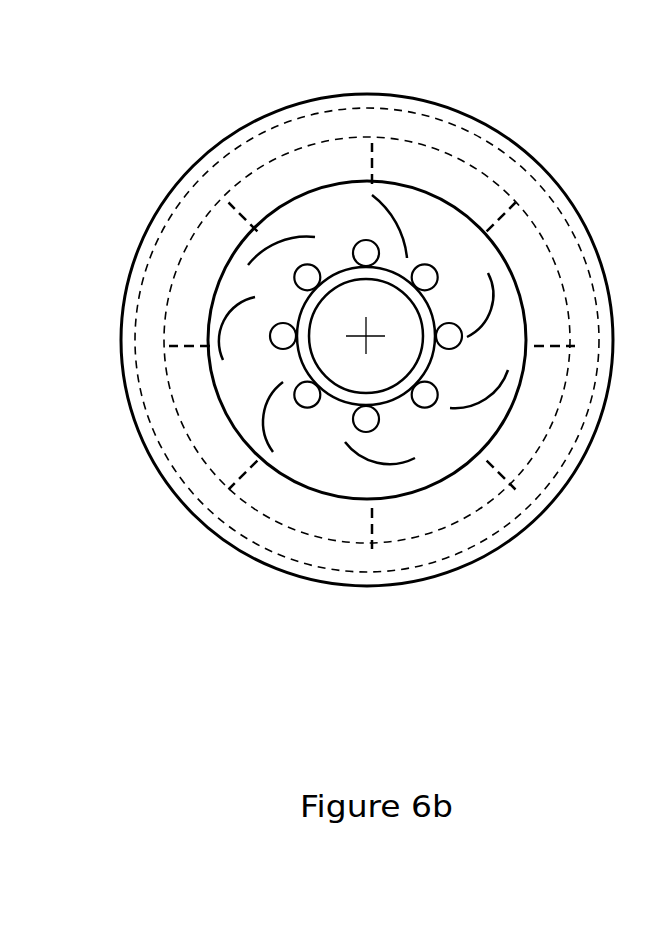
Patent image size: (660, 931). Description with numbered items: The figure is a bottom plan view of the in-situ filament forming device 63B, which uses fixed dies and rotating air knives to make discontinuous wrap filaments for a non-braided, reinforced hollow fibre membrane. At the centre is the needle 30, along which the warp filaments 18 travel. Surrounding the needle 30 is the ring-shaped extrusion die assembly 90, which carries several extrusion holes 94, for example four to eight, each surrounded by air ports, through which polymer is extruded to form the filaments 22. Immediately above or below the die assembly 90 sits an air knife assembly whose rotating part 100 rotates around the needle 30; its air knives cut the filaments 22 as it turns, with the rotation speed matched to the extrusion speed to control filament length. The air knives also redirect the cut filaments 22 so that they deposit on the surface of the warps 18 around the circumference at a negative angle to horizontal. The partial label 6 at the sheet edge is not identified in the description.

The ring-shaped extrusion die assembly 90 is at (330, 585).
The extrusion holes 94 is at (373, 502).
The filaments 22 is at (235, 310).
The warp filaments 18 is at (430, 267).
The needle 30 is at (424, 318).
The in-situ filament forming device 63B is at (120, 554).
The partial numeral 6 is at (4, 257).
The rotating part 100 is at (15, 359).